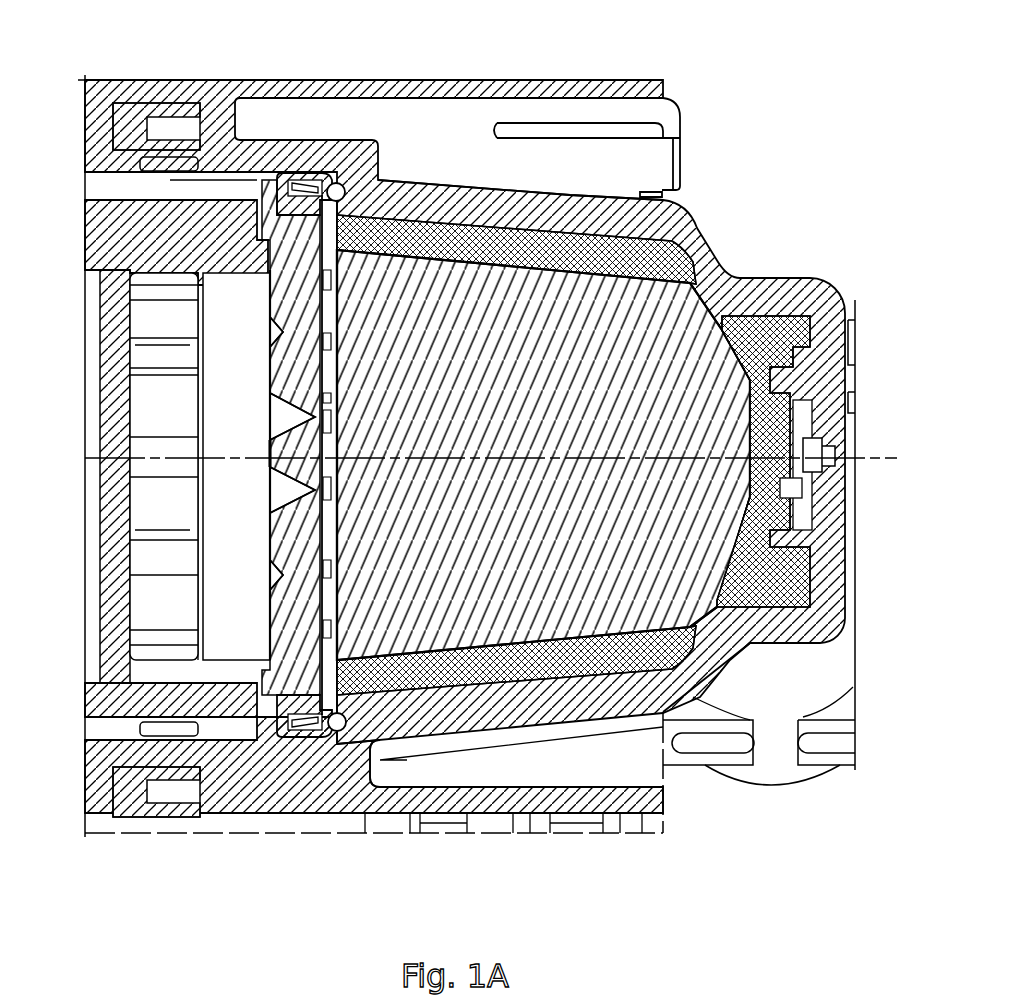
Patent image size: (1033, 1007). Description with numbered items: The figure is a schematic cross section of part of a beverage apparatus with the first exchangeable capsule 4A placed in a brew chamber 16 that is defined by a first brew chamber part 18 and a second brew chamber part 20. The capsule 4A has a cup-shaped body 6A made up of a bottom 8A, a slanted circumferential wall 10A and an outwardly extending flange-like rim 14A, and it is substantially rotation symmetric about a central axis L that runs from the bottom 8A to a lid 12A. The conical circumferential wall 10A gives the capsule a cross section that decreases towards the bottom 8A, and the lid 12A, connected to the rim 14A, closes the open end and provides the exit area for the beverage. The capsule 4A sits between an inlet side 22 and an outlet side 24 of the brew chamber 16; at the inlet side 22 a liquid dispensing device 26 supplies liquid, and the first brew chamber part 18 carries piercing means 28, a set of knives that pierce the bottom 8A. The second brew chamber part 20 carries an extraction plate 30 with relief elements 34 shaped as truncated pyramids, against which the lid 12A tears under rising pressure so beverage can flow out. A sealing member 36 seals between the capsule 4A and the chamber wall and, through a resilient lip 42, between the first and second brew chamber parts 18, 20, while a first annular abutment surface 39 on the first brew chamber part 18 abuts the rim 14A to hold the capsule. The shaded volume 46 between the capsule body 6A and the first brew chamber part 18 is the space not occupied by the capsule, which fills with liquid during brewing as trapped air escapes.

The first exchangeable capsule 4A is at (545, 441).
The cup-shaped body 6A is at (700, 252).
The bottom 8A is at (763, 316).
The circumferential wall 10A is at (603, 253).
The lid 12A is at (337, 372).
The flange-like rim 14A is at (352, 745).
The brew chamber 16 is at (603, 230).
The first brew chamber part 18 is at (585, 700).
The second brew chamber part 20 is at (262, 612).
The inlet side 22 is at (828, 380).
The outlet side 24 is at (283, 380).
The liquid dispensing device 26 is at (827, 463).
The piercing means 28 is at (793, 492).
The extraction plate 30 is at (285, 306).
The relief elements 34 is at (290, 547).
The sealing member 36 is at (300, 176).
The first annular abutment surface 39 is at (346, 190).
The resilient lip 42 is at (292, 185).
The volume 46 is at (543, 243).
The central axis L is at (906, 458).